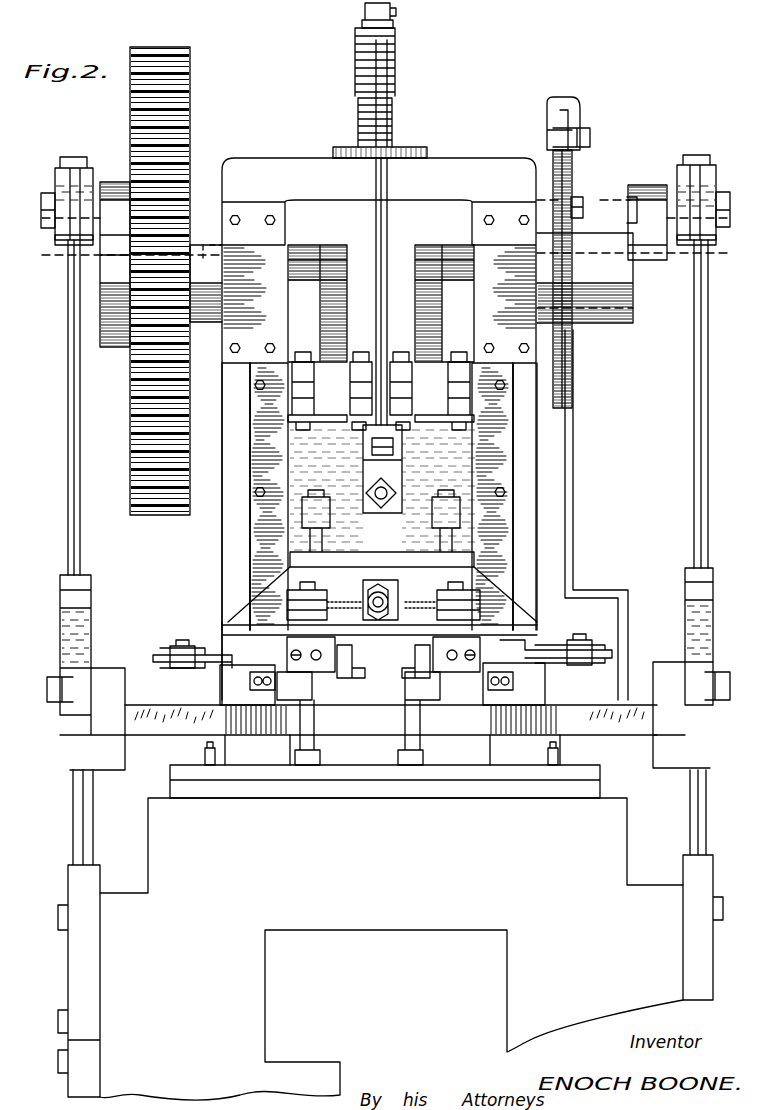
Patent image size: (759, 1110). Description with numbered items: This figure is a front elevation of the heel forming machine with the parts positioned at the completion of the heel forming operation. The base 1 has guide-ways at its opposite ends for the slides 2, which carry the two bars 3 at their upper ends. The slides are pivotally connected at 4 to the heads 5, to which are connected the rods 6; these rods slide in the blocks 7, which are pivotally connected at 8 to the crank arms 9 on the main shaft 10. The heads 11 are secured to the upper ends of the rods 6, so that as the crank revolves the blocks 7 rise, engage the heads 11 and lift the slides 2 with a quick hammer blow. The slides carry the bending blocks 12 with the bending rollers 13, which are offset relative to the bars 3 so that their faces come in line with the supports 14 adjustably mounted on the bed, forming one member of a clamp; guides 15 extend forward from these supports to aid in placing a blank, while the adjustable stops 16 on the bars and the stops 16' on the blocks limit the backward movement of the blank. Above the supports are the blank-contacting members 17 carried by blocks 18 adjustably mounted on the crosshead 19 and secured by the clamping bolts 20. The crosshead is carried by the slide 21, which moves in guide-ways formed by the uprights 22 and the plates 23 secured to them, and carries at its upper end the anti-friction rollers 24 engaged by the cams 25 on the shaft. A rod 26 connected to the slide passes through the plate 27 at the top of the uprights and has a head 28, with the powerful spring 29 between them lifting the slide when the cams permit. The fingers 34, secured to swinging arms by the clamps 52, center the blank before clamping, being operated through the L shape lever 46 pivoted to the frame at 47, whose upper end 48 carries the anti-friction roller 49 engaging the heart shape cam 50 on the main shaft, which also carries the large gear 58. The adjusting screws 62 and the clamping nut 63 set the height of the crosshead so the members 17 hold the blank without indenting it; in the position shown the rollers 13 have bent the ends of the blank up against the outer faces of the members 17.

The base 1 is at (401, 915).
The slides 2 is at (72, 808).
The bars 3 is at (148, 700).
The pivotal connection 4 is at (47, 690).
The heads 5 is at (65, 610).
The rods 6 is at (68, 295).
The blocks 7 is at (58, 247).
The pivotal connection 8 is at (41, 215).
The crank arms 9 is at (100, 312).
The main shaft 10 is at (203, 240).
The heads 11 is at (55, 175).
The bending blocks 12 is at (235, 692).
The bending rollers 13 is at (392, 735).
The supports 14 is at (300, 725).
The guides 15 is at (325, 745).
The adjustable stops 16 is at (383, 661).
The stops 16' is at (383, 679).
The blank-contacting members 17 is at (305, 705).
The blocks 18 is at (290, 640).
The crosshead 19 is at (245, 627).
The clamping bolts 20 is at (300, 588).
The slide 21 is at (520, 470).
The uprights 22 is at (250, 525).
The plates 23 is at (262, 440).
The anti-friction rollers 24 is at (330, 428).
The cams 25 is at (350, 290).
The rod 26 is at (373, 172).
The plate 27 is at (410, 150).
The head 28 is at (362, 17).
The spring 29 is at (400, 58).
The finger 34 is at (165, 648).
The L shape lever 46 is at (576, 555).
The pivot 47 is at (588, 205).
The upper end of lever 48 is at (570, 100).
The anti-friction roller 49 is at (590, 135).
The heart shape cam 50 is at (572, 350).
The clamps 52 is at (176, 646).
The large gear 58 is at (185, 105).
The adjusting screws 62 is at (432, 530).
The clamping nut 63 is at (398, 590).